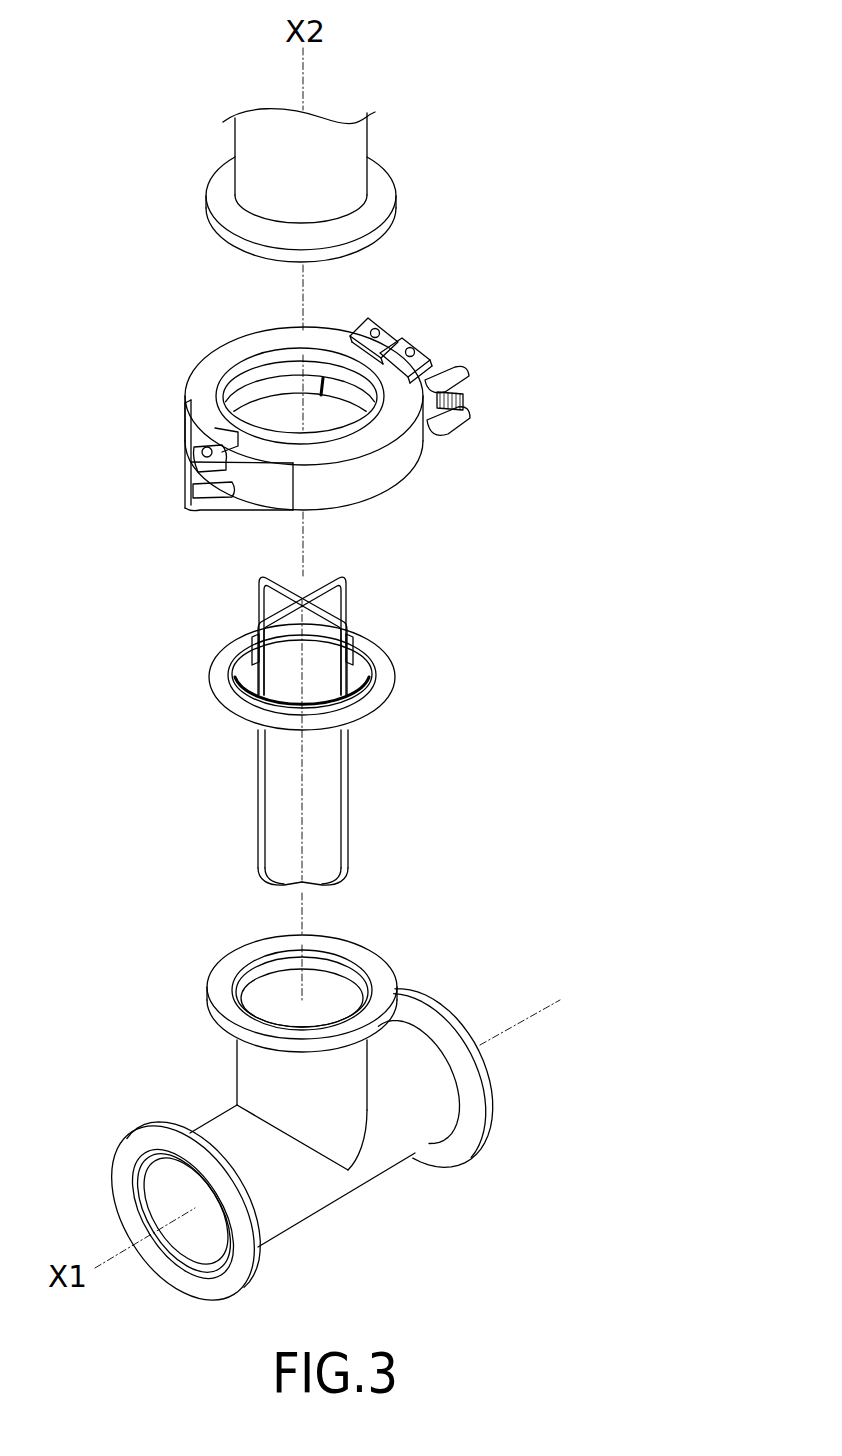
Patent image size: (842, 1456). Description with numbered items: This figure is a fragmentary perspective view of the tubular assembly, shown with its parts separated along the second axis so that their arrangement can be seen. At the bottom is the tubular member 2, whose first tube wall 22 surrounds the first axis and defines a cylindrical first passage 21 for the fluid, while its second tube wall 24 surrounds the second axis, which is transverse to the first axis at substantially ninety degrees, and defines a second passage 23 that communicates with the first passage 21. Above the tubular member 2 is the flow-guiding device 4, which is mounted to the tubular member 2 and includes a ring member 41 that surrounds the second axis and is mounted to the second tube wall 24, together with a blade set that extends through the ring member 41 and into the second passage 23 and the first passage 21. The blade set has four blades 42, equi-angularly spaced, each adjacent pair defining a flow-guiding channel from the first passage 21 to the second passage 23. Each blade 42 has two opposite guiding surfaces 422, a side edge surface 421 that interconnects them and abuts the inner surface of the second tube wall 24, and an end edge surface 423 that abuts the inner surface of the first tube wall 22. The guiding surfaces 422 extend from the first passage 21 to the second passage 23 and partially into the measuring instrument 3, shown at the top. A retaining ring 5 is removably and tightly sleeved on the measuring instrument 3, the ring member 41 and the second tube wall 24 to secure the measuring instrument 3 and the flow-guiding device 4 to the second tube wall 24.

The tubular member 2 is at (287, 1122).
The first passage 21 is at (173, 1180).
The first tube wall 22 is at (297, 1198).
The second passage 23 is at (263, 995).
The second tube wall 24 is at (252, 1067).
The measuring instrument 3 is at (380, 138).
The flow-guiding device 4 is at (305, 714).
The ring member 41 is at (387, 700).
The blades 42 is at (262, 578).
The side edge surface 421 is at (258, 770).
The guiding surfaces 422 is at (275, 795).
The end edge surface 423 is at (277, 885).
The retaining ring 5 is at (176, 364).